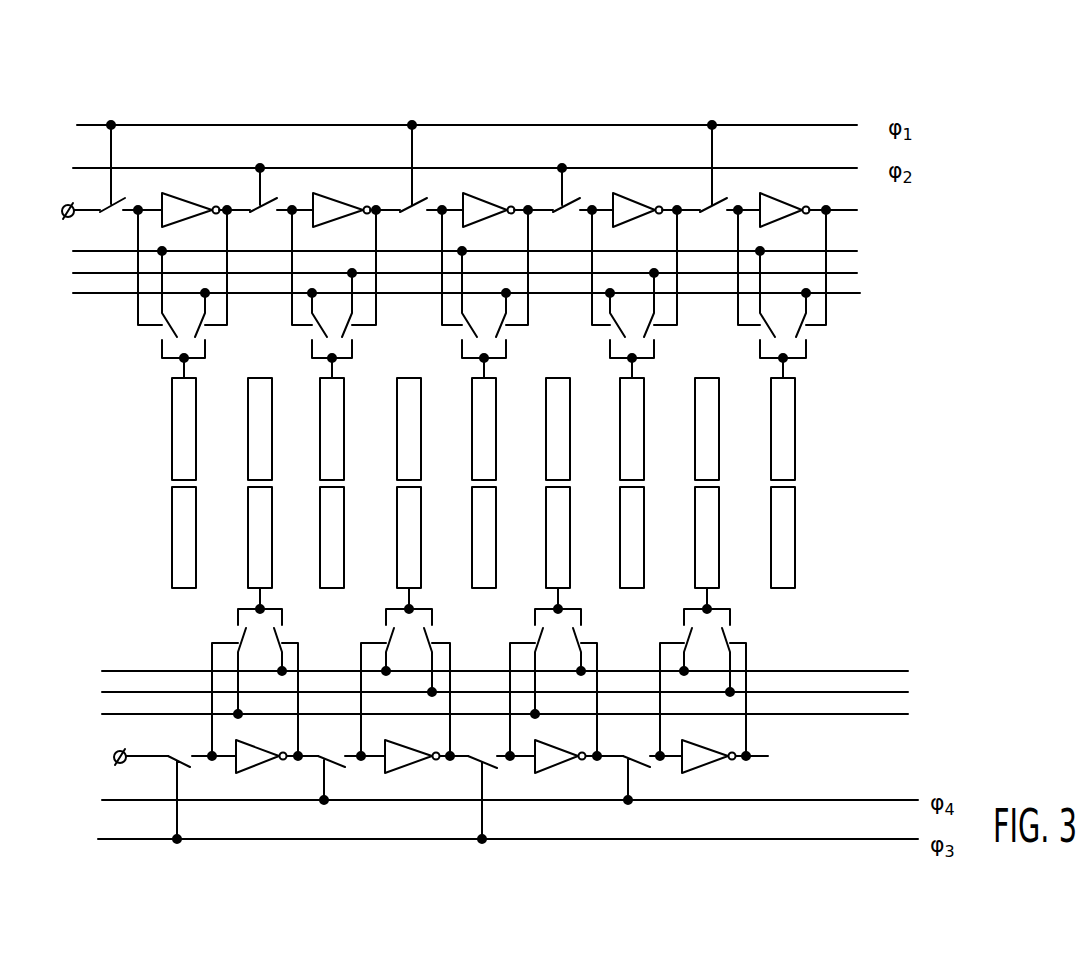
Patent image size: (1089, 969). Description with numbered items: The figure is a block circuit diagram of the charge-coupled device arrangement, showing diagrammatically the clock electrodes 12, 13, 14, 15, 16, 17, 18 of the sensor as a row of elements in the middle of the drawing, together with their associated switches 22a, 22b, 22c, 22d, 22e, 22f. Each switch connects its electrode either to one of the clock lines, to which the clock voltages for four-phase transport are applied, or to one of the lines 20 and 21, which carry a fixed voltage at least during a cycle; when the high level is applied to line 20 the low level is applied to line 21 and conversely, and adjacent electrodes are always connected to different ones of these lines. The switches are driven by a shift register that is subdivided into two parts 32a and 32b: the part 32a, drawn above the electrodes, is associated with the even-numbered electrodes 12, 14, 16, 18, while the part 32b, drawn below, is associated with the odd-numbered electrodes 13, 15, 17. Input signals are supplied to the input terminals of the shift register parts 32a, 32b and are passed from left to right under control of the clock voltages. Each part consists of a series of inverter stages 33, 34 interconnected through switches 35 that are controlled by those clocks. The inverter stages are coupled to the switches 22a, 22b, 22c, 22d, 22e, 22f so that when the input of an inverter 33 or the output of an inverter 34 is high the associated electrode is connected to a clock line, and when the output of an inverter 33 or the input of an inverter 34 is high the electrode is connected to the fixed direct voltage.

The clock electrode 12 is at (178, 548).
The clock electrode 13 is at (258, 548).
The clock electrode 14 is at (333, 548).
The clock electrode 15 is at (408, 548).
The clock electrode 16 is at (480, 548).
The clock electrode 17 is at (557, 548).
The clock electrode 18 is at (630, 548).
The line H/L 20 is at (898, 671).
The line L/H 21 is at (840, 297).
The switch 22a is at (164, 350).
The switch 22b is at (238, 623).
The switch 22c is at (314, 350).
The switch 22d is at (386, 623).
The switch 22e is at (467, 350).
The switch 22f is at (535, 623).
The shift register part 32a is at (887, 216).
The shift register part 32b is at (840, 756).
The inverter stage 33 is at (187, 201).
The inverter stage 34 is at (333, 201).
The switch 35 is at (258, 214).